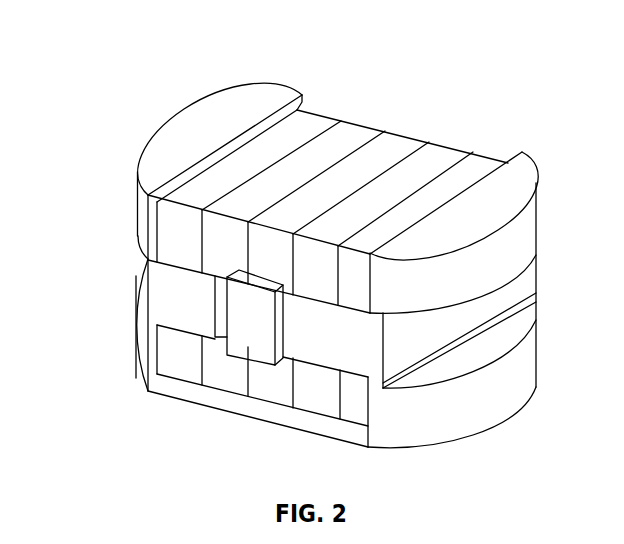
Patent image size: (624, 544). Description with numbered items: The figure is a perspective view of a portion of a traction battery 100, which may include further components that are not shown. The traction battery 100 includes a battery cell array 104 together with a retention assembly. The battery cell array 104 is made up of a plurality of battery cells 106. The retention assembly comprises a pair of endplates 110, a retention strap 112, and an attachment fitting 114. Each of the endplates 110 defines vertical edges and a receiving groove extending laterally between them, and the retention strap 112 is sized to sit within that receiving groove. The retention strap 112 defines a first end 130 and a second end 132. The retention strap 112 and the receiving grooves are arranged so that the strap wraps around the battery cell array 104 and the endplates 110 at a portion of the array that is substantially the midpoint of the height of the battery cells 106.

The traction battery 100 is at (127, 103).
The battery cell array 104 is at (400, 134).
The battery cells 106 is at (355, 142).
The endplates 110 is at (247, 113).
The retention strap 112 is at (134, 265).
The attachment fitting 114 is at (170, 355).
The first end 130 is at (240, 318).
The second end 132 is at (218, 313).